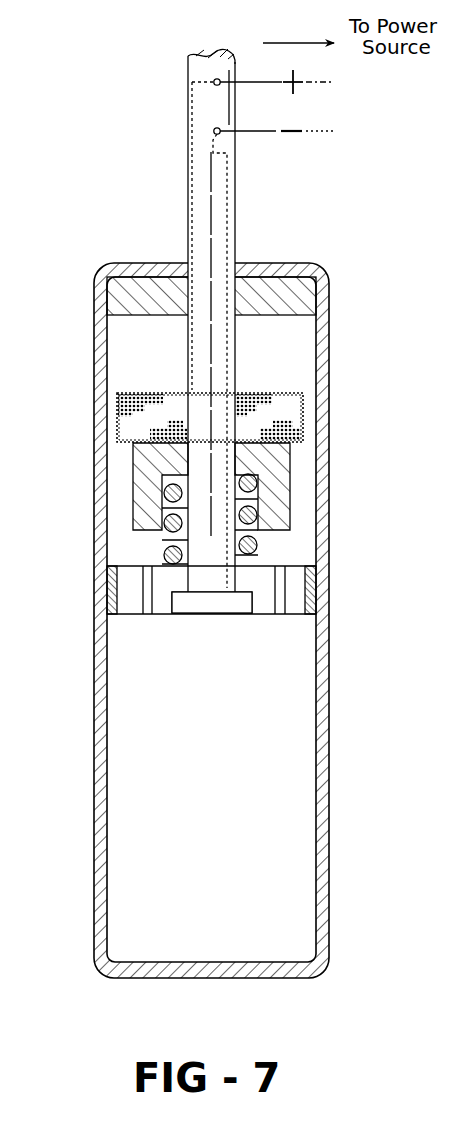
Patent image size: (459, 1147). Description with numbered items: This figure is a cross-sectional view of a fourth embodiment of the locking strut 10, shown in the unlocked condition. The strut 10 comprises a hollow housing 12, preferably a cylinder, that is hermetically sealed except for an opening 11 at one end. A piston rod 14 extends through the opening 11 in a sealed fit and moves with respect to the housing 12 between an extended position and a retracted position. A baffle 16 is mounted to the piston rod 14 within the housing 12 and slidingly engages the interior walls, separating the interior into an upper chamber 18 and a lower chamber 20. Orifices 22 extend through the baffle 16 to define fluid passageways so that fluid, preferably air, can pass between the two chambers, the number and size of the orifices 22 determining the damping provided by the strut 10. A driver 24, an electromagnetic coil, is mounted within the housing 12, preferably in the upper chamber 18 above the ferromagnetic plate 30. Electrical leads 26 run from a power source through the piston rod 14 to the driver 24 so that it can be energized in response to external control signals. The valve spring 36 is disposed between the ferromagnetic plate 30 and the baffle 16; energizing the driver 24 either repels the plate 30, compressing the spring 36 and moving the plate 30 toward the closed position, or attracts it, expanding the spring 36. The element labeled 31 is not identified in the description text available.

The locking strut 10 is at (104, 174).
The opening 11 is at (235, 281).
The housing 12 is at (92, 338).
The piston rod 14 is at (201, 198).
The baffle 16 is at (293, 588).
The upper chamber 18 is at (282, 352).
The lower chamber 20 is at (273, 822).
The orifice 22 is at (148, 588).
The driver 24 is at (288, 408).
The electrical leads 26 is at (333, 83).
The ferromagnetic plate 30 is at (280, 480).
The insulator block 31 is at (135, 493).
The valve spring 36 is at (280, 552).